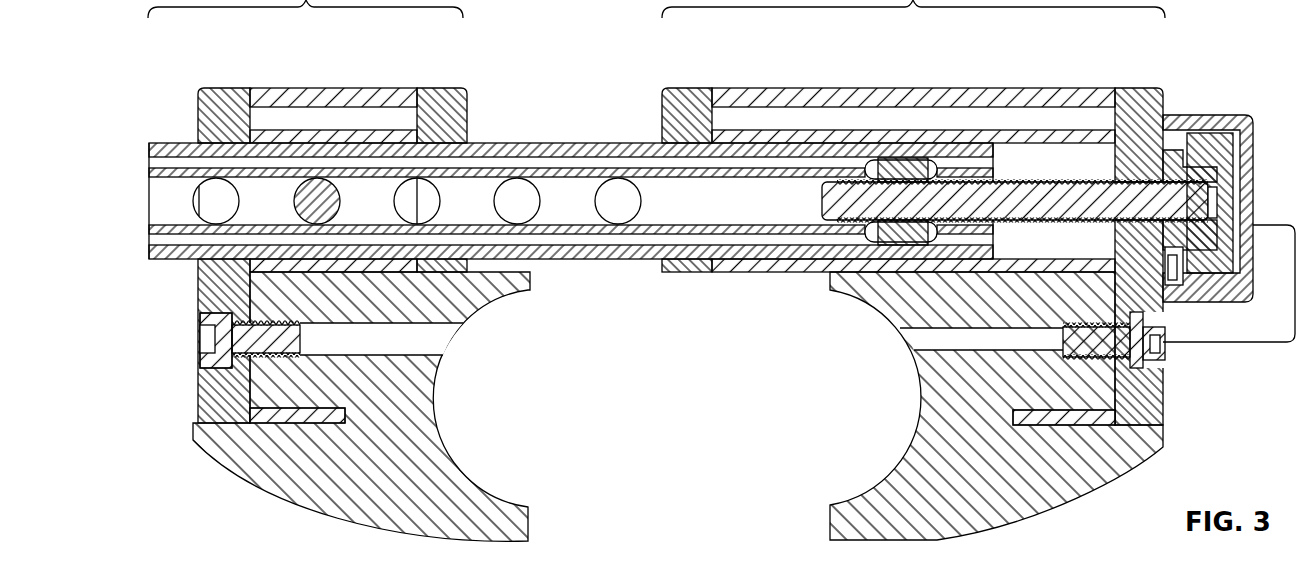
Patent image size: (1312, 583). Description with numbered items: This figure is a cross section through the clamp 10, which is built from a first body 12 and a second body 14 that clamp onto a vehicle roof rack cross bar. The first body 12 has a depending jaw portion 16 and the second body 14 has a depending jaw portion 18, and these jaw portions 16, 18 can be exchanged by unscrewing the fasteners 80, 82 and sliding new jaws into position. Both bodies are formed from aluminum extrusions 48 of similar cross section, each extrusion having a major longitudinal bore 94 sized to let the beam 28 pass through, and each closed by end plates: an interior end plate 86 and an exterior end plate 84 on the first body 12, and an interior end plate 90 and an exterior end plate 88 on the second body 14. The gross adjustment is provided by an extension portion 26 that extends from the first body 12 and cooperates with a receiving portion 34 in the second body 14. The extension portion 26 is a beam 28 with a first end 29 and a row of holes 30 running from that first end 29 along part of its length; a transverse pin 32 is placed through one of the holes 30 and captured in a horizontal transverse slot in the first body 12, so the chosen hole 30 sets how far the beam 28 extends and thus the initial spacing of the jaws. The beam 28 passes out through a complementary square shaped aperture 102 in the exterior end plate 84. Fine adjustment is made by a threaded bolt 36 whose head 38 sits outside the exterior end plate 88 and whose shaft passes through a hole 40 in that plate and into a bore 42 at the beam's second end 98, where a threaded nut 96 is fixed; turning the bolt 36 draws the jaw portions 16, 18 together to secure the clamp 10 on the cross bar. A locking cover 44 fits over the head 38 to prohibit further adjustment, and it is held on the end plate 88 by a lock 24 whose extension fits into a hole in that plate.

The clamp 10 is at (480, 90).
The first body 12 is at (253, 88).
The second body 14 is at (855, 88).
The jaw portion 16 is at (255, 490).
The jaw portion 18 is at (1095, 487).
The lock 24 is at (1168, 285).
The extension portion 26 is at (567, 143).
The beam 28 is at (162, 143).
The first end 29 is at (148, 150).
The holes 30 is at (192, 203).
The transverse pin 32 is at (293, 197).
The receiving portion 34 is at (1053, 137).
The threaded bolt 36 is at (837, 200).
The head 38 is at (1240, 175).
The hole 40 is at (1130, 177).
The bore 42 is at (992, 177).
The locking cover 44 is at (1245, 115).
The extrusions 48 is at (340, 88).
The fastener 80 is at (200, 325).
The fastener 82 is at (1170, 355).
The exterior end plate 84 is at (198, 92).
The interior end plate 86 is at (437, 88).
The exterior end plate 88 is at (1140, 88).
The interior end plate 90 is at (687, 88).
The major longitudinal bore 94 is at (378, 130).
The threaded nut 96 is at (897, 247).
The second end 98 is at (993, 243).
The square shaped aperture 102 is at (199, 262).